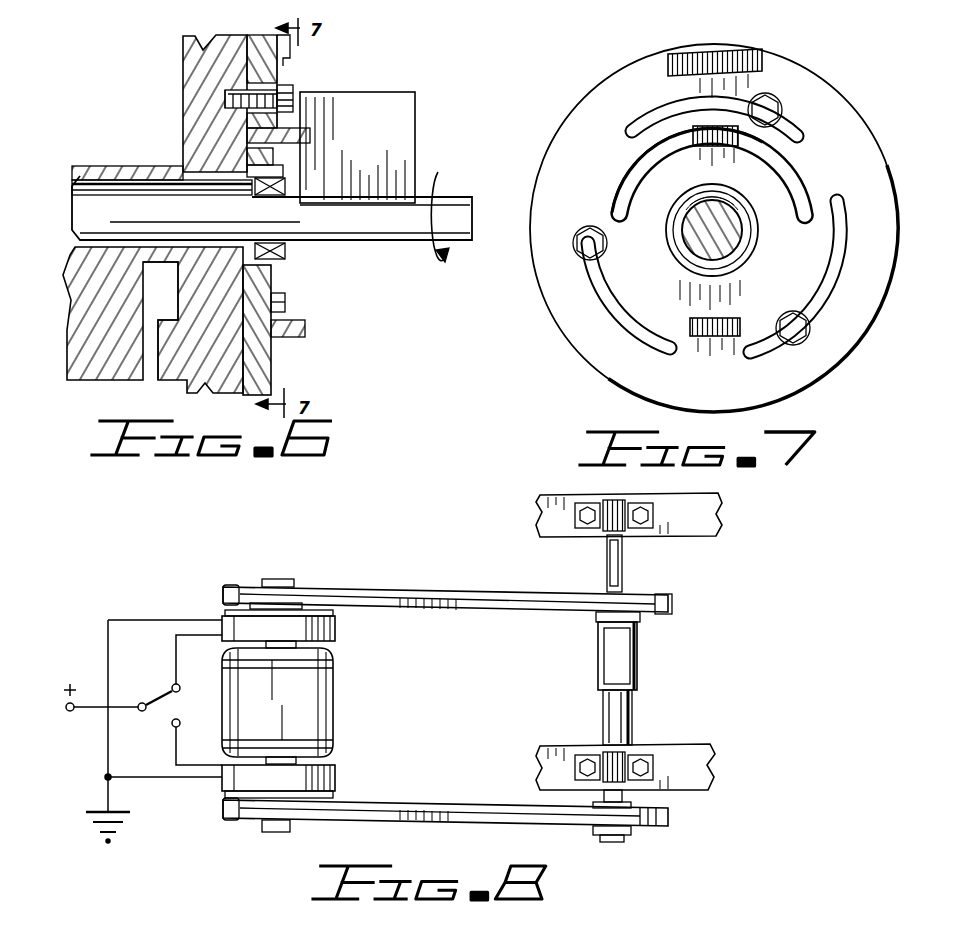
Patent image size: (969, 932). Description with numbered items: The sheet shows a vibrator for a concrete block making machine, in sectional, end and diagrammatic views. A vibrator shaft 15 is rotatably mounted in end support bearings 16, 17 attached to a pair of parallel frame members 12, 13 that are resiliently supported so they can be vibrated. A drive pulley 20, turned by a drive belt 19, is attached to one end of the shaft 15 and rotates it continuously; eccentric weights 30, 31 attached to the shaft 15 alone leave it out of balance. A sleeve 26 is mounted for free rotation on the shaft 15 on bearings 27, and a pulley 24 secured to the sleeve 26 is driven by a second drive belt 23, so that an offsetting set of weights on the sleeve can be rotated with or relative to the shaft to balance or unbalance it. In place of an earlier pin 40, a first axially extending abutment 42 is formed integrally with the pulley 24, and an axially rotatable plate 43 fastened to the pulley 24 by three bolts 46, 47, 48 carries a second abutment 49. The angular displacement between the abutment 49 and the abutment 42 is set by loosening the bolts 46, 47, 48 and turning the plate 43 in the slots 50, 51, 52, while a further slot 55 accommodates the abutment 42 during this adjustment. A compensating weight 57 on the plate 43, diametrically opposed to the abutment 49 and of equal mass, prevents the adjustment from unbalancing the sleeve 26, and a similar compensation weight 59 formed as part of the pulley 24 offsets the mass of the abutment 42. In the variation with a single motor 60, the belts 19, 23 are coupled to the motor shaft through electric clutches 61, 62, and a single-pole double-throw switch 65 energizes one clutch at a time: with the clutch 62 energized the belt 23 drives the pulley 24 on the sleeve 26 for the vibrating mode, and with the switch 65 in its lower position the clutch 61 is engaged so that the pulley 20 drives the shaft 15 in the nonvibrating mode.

In FIG. 8, the frame member 12 is at (678, 752).
In FIG. 8, the frame member 13 is at (716, 522).
In FIG. 6, the vibrator shaft 15 is at (456, 206).
In FIG. 7, the vibrator shaft 15 is at (738, 250).
In FIG. 8, the vibrator shaft 15 is at (628, 740).
In FIG. 8, the end support bearing 16 is at (602, 758).
In FIG. 8, the end support bearing 17 is at (606, 526).
In FIG. 8, the drive belt 19 is at (430, 806).
In FIG. 8, the drive pulley 20 is at (575, 830).
In FIG. 8, the drive belt 23 is at (486, 594).
In FIG. 6, the pulley 24 is at (181, 66).
In FIG. 8, the pulley 24 is at (656, 616).
In FIG. 6, the sleeve 26 is at (133, 166).
In FIG. 7, the sleeve 26 is at (748, 272).
In FIG. 8, the sleeve 26 is at (638, 674).
In FIG. 6, the bearings 27 is at (285, 252).
In FIG. 7, the bearings 27 is at (752, 236).
In FIG. 8, the eccentric weight 30 is at (622, 566).
In FIG. 6, the eccentric weight 31 is at (416, 112).
In FIG. 8, the eccentric weight 31 is at (626, 716).
In FIG. 6, the pin 40 is at (100, 374).
In FIG. 6, the first abutment 42 is at (312, 135).
In FIG. 7, the first abutment 42 is at (722, 148).
In FIG. 6, the plate 43 is at (272, 378).
In FIG. 7, the plate 43 is at (848, 128).
In FIG. 7, the bolt 46 is at (586, 256).
In FIG. 6, the bolt 47 is at (296, 90).
In FIG. 7, the bolt 47 is at (776, 108).
In FIG. 6, the bolt 48 is at (287, 306).
In FIG. 7, the bolt 48 is at (808, 334).
In FIG. 6, the second abutment 49 is at (306, 326).
In FIG. 7, the second abutment 49 is at (720, 338).
In FIG. 7, the slot 50 is at (614, 296).
In FIG. 7, the slot 51 is at (636, 120).
In FIG. 7, the slot 52 is at (840, 268).
In FIG. 7, the slot 55 is at (806, 178).
In FIG. 6, the compensating weight 57 is at (290, 58).
In FIG. 7, the compensating weight 57 is at (746, 52).
In FIG. 6, the compensation weight 59 is at (162, 378).
In FIG. 8, the motor 60 is at (334, 724).
In FIG. 8, the electric clutch 61 is at (336, 774).
In FIG. 8, the electric clutch 62 is at (336, 630).
In FIG. 8, the switch 65 is at (184, 694).